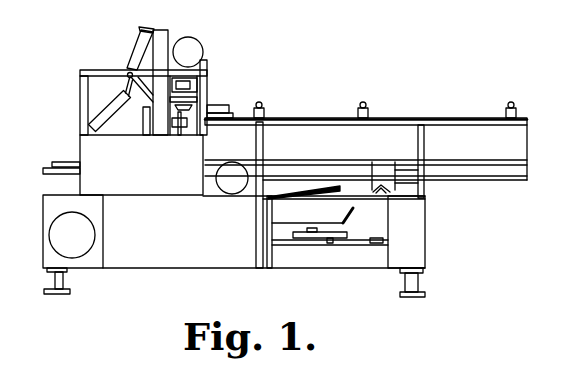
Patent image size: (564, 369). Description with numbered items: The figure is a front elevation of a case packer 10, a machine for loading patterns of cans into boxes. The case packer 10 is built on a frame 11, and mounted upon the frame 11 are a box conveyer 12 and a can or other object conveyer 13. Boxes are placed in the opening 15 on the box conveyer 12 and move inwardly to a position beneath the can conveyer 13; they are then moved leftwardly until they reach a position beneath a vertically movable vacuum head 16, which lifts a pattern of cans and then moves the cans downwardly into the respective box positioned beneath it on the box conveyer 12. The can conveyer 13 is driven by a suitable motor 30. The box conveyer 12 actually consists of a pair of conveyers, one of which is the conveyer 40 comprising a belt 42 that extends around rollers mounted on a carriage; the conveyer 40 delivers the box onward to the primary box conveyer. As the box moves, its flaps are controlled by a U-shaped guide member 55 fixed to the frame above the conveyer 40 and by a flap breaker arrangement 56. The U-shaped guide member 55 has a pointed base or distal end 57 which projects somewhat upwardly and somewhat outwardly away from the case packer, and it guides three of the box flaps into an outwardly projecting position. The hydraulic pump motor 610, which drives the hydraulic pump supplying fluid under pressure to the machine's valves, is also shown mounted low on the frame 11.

The case packer 10 is at (285, 170).
The frame 11 is at (417, 247).
The box conveyer 12 is at (375, 217).
The can conveyer 13 is at (320, 138).
The opening 15 is at (368, 228).
The vacuum head 16 is at (184, 88).
The can conveyer motor 30 is at (228, 190).
The conveyer 40 is at (343, 247).
The belt 42 is at (357, 242).
The U-shaped guide member 55 is at (407, 183).
The flap breaker arrangement 56 is at (338, 215).
The pointed base or distal end 57 is at (380, 185).
The hydraulic pump motor 610 is at (77, 240).